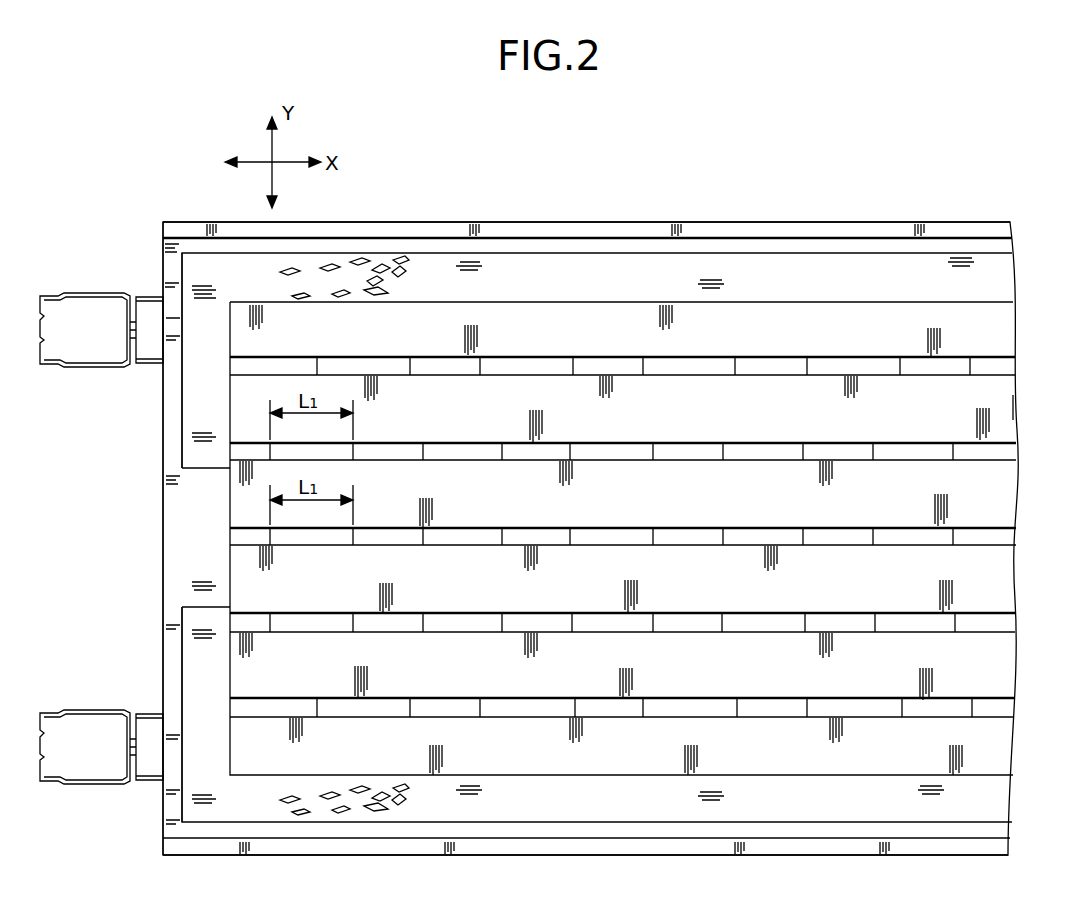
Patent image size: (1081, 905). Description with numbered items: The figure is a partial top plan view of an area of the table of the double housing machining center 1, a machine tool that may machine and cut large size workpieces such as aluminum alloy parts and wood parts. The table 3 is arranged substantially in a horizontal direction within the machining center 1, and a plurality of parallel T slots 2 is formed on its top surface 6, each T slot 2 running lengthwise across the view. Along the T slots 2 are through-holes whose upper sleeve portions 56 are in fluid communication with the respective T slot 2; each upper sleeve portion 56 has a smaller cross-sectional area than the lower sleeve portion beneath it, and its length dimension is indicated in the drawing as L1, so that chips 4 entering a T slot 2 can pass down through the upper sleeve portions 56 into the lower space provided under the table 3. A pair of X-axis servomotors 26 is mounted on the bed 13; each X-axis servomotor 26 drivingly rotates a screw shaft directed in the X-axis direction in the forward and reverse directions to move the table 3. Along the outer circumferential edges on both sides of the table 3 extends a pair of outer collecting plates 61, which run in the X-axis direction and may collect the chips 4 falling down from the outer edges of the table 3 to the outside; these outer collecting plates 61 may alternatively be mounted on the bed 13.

The double housing machining center 1 is at (884, 170).
The T slot 2 is at (699, 357).
The table 3 is at (880, 300).
The chips 4 is at (381, 265).
The top surface 6 is at (990, 408).
The bed 13 is at (650, 221).
The X-axis servomotor 26 is at (86, 292).
The upper sleeve portion 56 is at (368, 358).
The outer collecting plate 61 is at (803, 251).